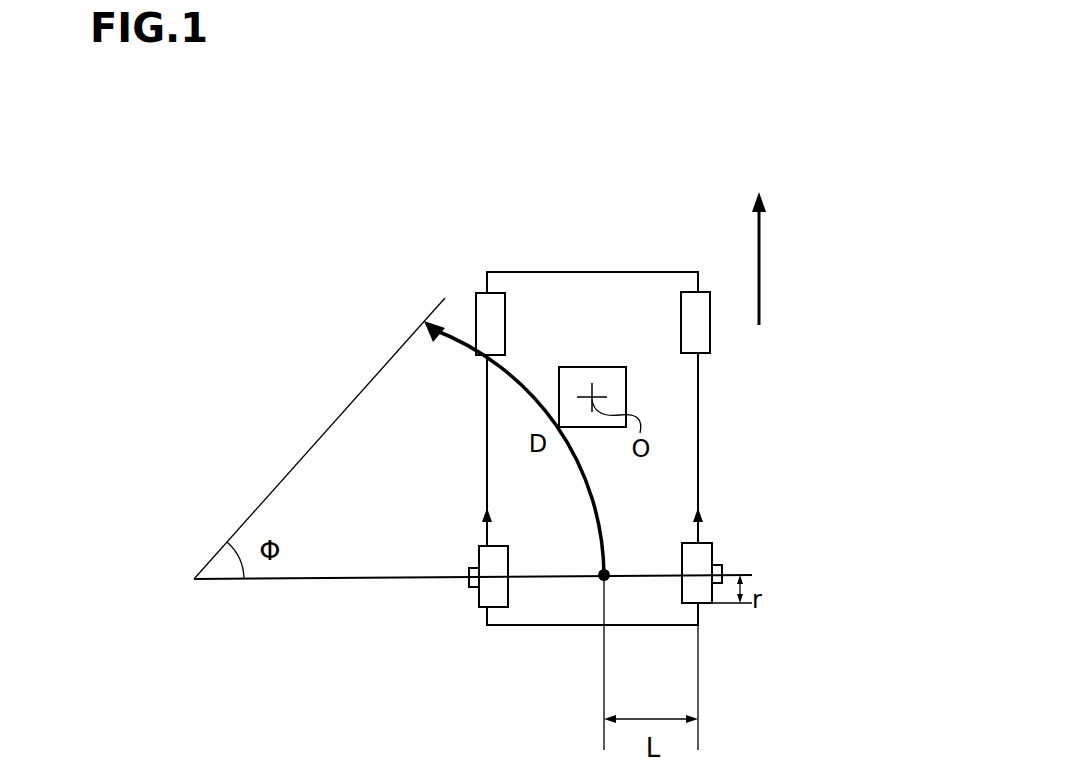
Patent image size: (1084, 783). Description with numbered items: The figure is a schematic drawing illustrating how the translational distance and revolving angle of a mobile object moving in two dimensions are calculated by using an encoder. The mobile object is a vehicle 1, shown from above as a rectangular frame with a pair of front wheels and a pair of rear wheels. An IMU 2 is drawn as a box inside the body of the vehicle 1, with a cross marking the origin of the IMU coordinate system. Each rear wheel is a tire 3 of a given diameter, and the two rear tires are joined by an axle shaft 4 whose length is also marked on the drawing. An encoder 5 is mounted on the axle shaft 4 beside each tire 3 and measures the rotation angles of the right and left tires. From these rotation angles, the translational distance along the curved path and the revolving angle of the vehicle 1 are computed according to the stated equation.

The vehicle 1 is at (632, 272).
The IMU 2 is at (599, 367).
The tire 3 is at (481, 607).
The axle shaft 4 is at (642, 572).
The encoder 5 is at (470, 580).